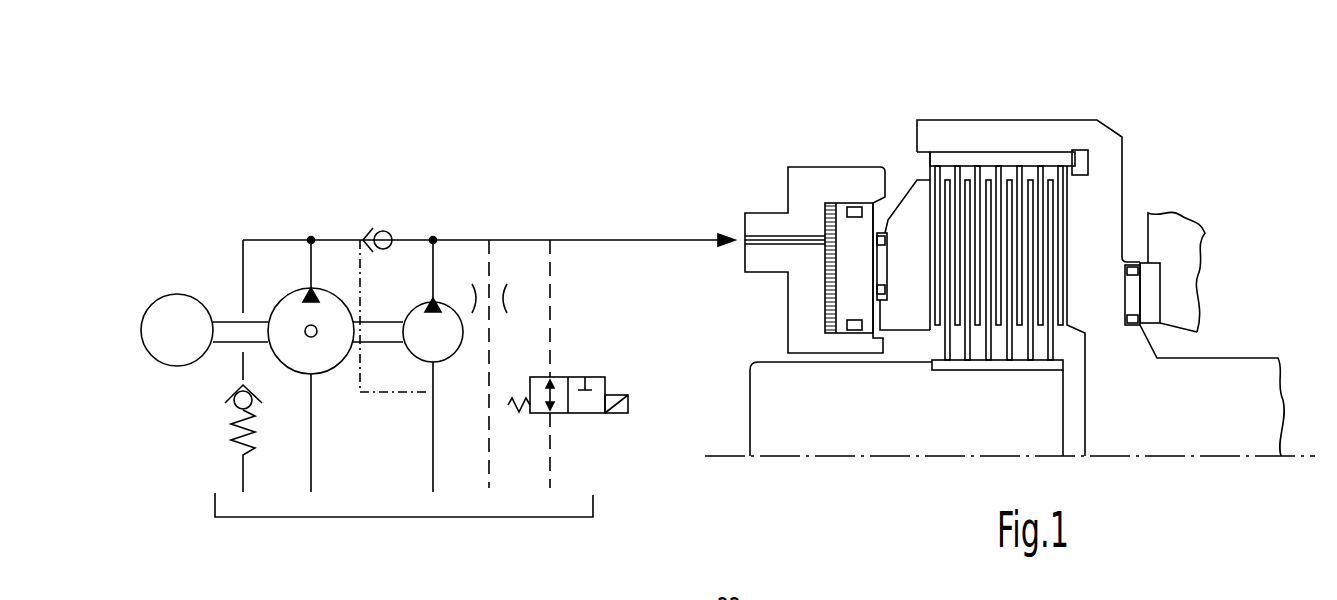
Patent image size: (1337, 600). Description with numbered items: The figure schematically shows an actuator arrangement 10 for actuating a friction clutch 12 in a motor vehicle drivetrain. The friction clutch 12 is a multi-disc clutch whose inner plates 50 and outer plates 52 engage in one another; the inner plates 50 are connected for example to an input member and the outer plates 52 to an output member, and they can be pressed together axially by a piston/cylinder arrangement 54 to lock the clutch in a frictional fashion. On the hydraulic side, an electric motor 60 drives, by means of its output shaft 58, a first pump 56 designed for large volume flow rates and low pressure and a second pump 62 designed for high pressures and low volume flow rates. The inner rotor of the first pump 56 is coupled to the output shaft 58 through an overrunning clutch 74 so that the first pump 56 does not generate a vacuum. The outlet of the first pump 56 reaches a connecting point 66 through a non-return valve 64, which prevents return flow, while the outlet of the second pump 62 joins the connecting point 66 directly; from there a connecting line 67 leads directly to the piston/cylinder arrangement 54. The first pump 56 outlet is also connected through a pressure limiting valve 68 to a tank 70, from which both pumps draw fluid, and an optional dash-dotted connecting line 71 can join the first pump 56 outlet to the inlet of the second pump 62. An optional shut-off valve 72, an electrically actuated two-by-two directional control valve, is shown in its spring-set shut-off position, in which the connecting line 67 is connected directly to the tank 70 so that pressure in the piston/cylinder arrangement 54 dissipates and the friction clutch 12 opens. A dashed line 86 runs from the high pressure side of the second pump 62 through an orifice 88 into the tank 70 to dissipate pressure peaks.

The actuator arrangement 10 is at (633, 174).
The friction clutch 12 is at (1175, 194).
The inner plates 50 is at (1055, 347).
The outer plates 52 is at (933, 172).
The piston/cylinder arrangement 54 is at (833, 167).
The first pump 56 is at (287, 307).
The output shaft 58 is at (227, 335).
The electric motor 60 is at (163, 300).
The second pump 62 is at (437, 348).
The non-return valve 64 is at (370, 228).
The connecting point 66 is at (437, 233).
The connecting line 67 is at (593, 240).
The pressure limiting valve 68 is at (232, 410).
The tank 70 is at (340, 500).
The connecting line 71 is at (402, 395).
The shut-off valve 72 is at (588, 398).
The overrunning clutch 74 is at (303, 335).
The line 86 is at (490, 458).
The orifice 88 is at (477, 300).